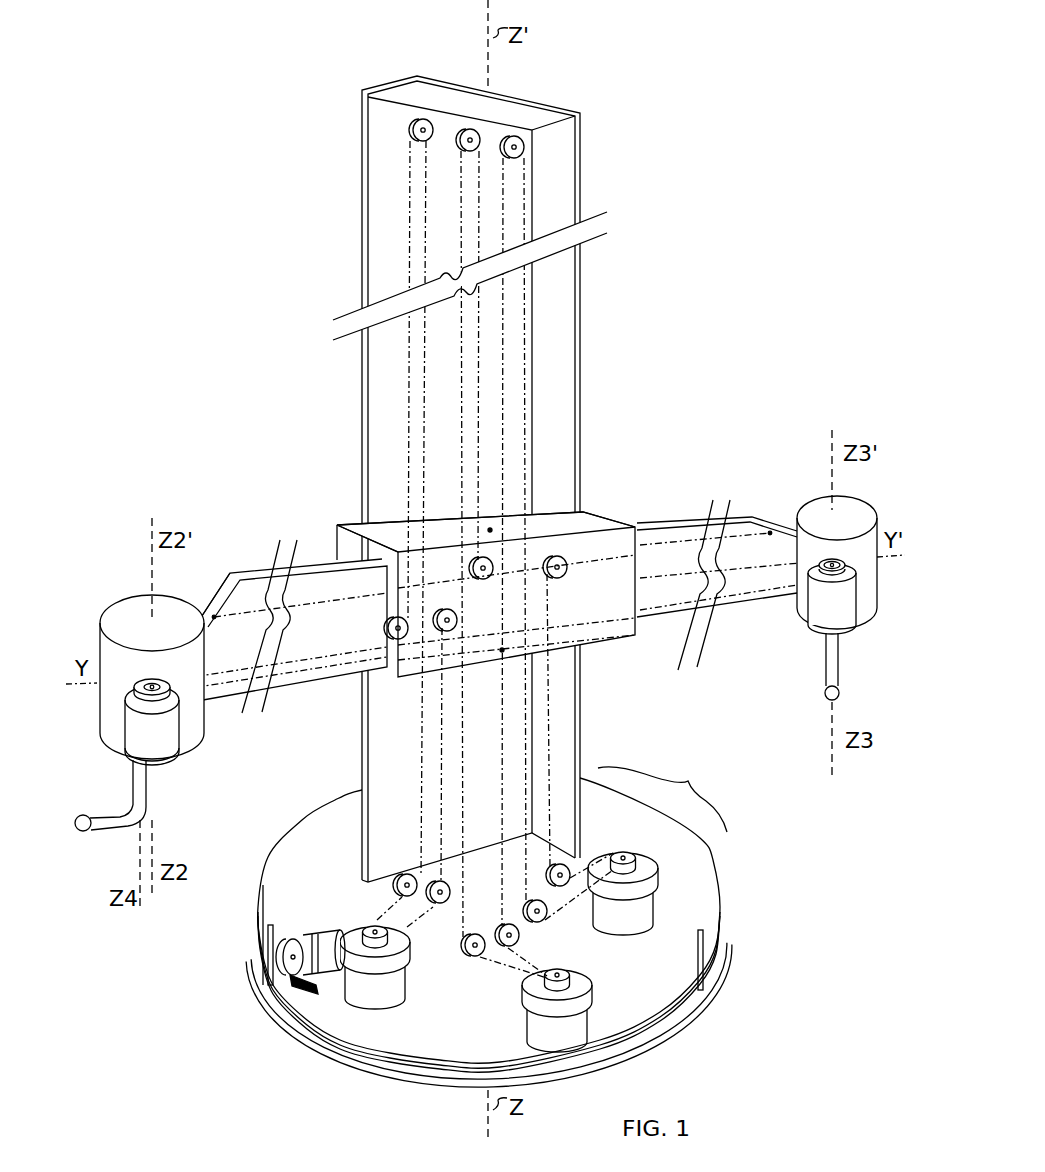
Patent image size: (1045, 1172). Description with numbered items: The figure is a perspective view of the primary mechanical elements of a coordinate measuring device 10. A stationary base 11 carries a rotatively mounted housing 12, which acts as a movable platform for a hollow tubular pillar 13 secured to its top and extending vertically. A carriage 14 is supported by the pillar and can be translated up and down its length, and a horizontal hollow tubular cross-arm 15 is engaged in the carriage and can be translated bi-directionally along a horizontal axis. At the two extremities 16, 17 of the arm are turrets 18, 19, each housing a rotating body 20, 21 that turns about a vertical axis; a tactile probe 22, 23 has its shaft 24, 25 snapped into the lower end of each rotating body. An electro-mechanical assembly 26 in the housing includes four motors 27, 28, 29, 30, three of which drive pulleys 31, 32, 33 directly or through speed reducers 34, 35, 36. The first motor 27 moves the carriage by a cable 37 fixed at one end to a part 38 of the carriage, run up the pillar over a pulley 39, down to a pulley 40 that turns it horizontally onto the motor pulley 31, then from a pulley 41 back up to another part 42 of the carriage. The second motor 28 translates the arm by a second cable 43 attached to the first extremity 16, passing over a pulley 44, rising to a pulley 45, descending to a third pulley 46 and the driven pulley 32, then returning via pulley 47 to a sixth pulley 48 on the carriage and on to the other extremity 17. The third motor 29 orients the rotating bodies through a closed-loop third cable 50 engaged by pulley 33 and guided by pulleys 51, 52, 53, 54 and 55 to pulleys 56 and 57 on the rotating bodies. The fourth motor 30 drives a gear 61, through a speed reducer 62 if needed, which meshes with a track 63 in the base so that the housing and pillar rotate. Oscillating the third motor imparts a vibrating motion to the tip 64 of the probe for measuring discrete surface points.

The coordinate measuring device 10 is at (612, 88).
The stationary base 11 is at (735, 965).
The housing 12 is at (717, 918).
The hollow tubular pillar 13 is at (582, 190).
The carriage 14 is at (588, 513).
The horizontal hollow tubular cross-arm 15 is at (325, 562).
The first extremity of the arm 16 is at (198, 604).
The other extremity of the arm 17 is at (793, 530).
The turret 18 is at (120, 612).
The turret 19 is at (815, 506).
The rotating body 20 is at (168, 758).
The rotating body 21 is at (813, 633).
The tactile probe 22 is at (122, 797).
The tactile probe 23 is at (850, 677).
The probe shaft 24 is at (148, 788).
The probe shaft 25 is at (823, 682).
The electro-mechanical assembly 26 is at (662, 792).
The first motor 27 is at (582, 1016).
The second motor 28 is at (654, 902).
The third motor 29 is at (385, 1000).
The fourth motor 30 is at (326, 931).
The motor pulley 31 is at (571, 974).
The pulley 32 is at (634, 857).
The pulley 33 is at (368, 925).
The speed reducer 34 is at (594, 990).
The speed reducer 35 is at (659, 880).
The speed reducer 36 is at (410, 960).
The cable 37 is at (482, 452).
The part of the carriage 38 is at (488, 528).
The pulley 39 is at (470, 128).
The pulley 40 is at (477, 957).
The direction-altering pulley 41 is at (505, 924).
The part of the carriage 42 is at (501, 652).
The second cable 43 is at (330, 607).
The direction-altering pulley 44 is at (471, 568).
The direction-alternating pulley 45 is at (525, 148).
The third direction-alternating pulley 46 is at (545, 923).
The pulley 47 is at (563, 862).
The sixth pulley 48 is at (569, 566).
The third cable 50 is at (410, 447).
The direction-altering pulley 51 is at (440, 905).
The direction-altering pulley 52 is at (405, 873).
The direction-altering pulley 53 is at (388, 628).
The direction-altering pulley 54 is at (458, 620).
The direction-altering pulley 55 is at (412, 126).
The pulley 56 is at (145, 683).
The pulley 57 is at (838, 556).
The gear 61 is at (290, 940).
The speed reducer 62 is at (320, 985).
The track 63 is at (291, 1035).
The tip 64 is at (88, 831).